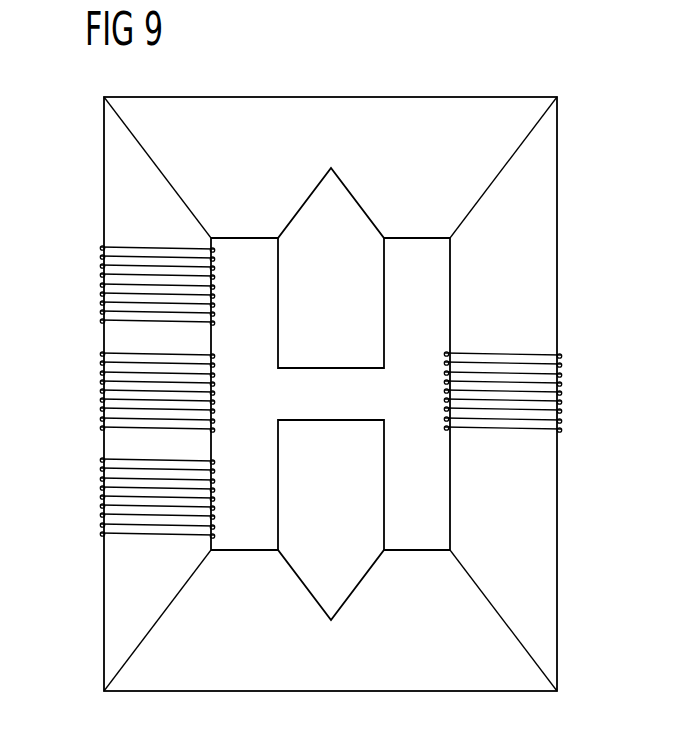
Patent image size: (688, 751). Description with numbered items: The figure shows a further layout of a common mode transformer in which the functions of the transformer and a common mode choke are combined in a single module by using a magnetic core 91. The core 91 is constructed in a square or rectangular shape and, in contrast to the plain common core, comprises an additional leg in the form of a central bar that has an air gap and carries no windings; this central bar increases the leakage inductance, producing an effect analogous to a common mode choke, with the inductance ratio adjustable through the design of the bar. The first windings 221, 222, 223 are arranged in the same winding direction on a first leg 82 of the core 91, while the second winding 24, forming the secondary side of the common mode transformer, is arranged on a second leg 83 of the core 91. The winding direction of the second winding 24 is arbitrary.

The magnetic core 91 is at (461, 97).
The first leg 82 is at (104, 160).
The second leg 83 is at (558, 237).
The first winding 221 is at (100, 296).
The first winding 222 is at (100, 403).
The first winding 223 is at (100, 508).
The second winding 24 is at (563, 418).